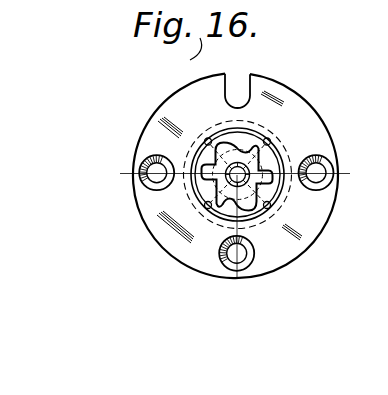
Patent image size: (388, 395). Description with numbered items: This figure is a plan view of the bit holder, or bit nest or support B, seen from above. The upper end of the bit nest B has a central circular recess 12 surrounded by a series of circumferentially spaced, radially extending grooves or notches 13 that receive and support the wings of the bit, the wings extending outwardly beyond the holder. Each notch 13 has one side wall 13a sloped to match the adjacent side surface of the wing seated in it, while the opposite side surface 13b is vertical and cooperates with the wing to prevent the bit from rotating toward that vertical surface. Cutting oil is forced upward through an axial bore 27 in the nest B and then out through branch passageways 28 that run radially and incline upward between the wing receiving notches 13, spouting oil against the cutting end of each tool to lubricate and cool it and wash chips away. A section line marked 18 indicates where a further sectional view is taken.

The bit nest or support B is at (133, 146).
The central circular recess 12 is at (254, 218).
The radially extending grooves or notches 13 is at (244, 151).
The sloped side wall 13a is at (139, 184).
The vertical side surface 13b is at (334, 174).
The section line 18 is at (267, 142).
The axial bore 27 is at (292, 127).
The branch passageways 28 is at (206, 139).